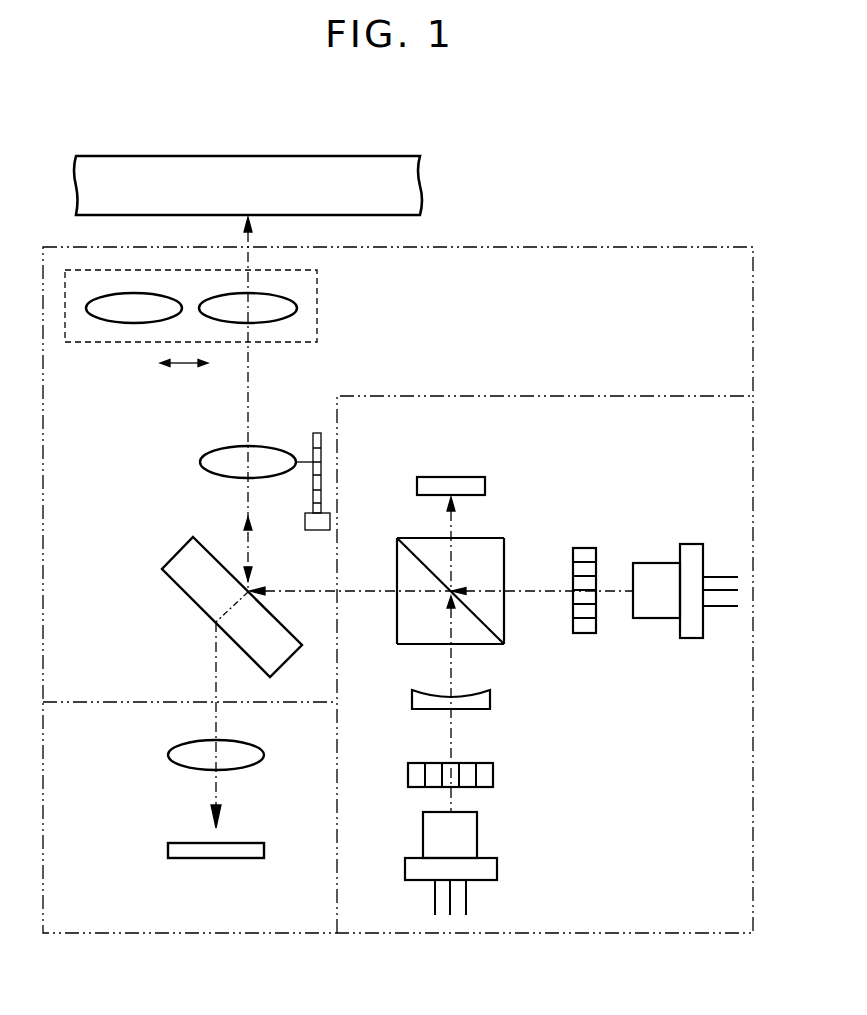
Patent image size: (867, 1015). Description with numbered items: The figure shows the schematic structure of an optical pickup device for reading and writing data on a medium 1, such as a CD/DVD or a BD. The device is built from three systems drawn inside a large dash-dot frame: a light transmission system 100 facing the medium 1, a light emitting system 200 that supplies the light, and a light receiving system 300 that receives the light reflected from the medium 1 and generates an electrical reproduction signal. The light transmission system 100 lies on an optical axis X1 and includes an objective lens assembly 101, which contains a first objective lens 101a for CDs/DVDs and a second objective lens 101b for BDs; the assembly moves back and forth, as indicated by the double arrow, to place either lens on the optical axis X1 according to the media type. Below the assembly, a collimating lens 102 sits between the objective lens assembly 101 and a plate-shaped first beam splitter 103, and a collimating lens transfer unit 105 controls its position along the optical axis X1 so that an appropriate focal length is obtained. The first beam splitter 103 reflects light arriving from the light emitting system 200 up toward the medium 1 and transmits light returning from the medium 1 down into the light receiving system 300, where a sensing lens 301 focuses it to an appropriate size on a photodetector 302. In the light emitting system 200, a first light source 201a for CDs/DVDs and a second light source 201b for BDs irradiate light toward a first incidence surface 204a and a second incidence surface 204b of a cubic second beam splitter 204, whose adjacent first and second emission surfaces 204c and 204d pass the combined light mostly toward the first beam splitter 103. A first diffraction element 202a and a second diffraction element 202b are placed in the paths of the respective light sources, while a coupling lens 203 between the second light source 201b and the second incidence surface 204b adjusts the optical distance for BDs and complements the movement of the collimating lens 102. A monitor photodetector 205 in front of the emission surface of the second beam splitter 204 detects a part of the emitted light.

The medium 1 is at (421, 191).
The light transmission system 100 is at (622, 246).
The objective lens assembly 101 is at (336, 306).
The first objective lens 101a is at (105, 322).
The second objective lens 101b is at (277, 322).
The optical axis X1 is at (247, 406).
The collimating lens 102 is at (200, 462).
The first beam splitter 103 is at (178, 581).
The collimating lens transfer unit 105 is at (312, 531).
The light emitting system 200 is at (557, 935).
The first light source 201a is at (693, 548).
The second light source 201b is at (497, 870).
The first diffraction element 202a is at (586, 548).
The second diffraction element 202b is at (493, 775).
The coupling lens 203 is at (490, 699).
The second beam splitter 204 is at (457, 567).
The first incidence surface 204a is at (505, 622).
The second incidence surface 204b is at (402, 646).
The first emission surface 204c is at (493, 538).
The first emission surface 204d is at (397, 558).
The monitor photodetector 205 is at (451, 475).
The light receiving system 300 is at (212, 935).
The sensing lens 301 is at (168, 755).
The photodetector 302 is at (168, 850).